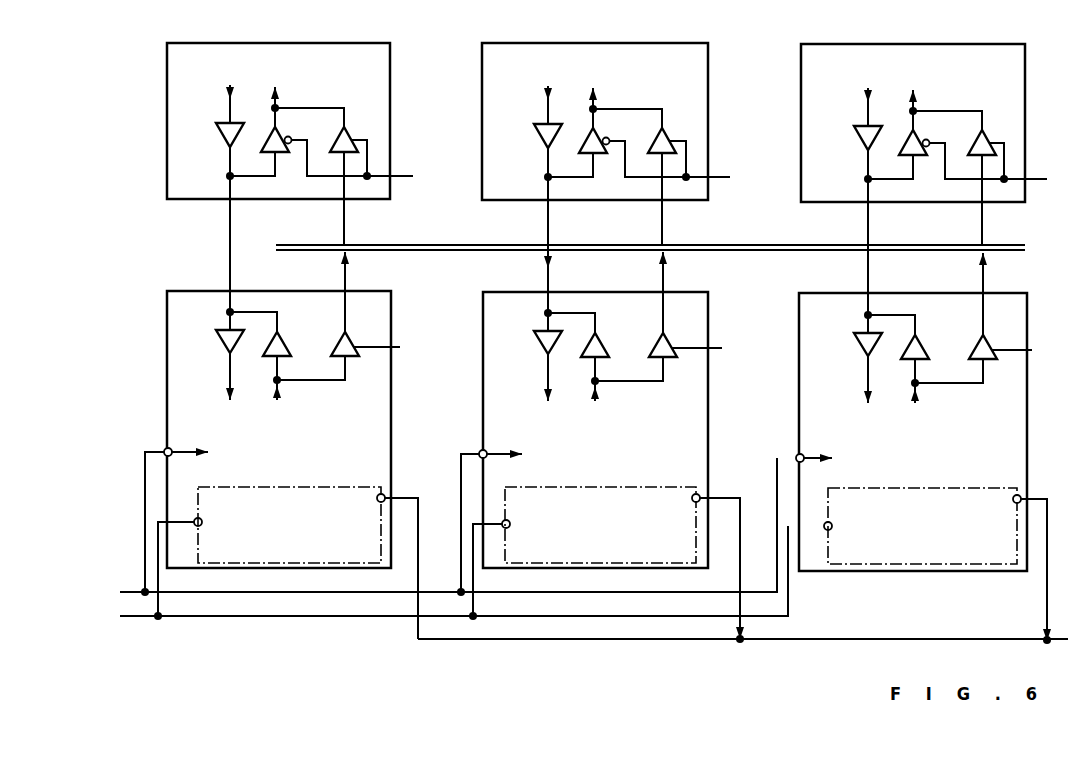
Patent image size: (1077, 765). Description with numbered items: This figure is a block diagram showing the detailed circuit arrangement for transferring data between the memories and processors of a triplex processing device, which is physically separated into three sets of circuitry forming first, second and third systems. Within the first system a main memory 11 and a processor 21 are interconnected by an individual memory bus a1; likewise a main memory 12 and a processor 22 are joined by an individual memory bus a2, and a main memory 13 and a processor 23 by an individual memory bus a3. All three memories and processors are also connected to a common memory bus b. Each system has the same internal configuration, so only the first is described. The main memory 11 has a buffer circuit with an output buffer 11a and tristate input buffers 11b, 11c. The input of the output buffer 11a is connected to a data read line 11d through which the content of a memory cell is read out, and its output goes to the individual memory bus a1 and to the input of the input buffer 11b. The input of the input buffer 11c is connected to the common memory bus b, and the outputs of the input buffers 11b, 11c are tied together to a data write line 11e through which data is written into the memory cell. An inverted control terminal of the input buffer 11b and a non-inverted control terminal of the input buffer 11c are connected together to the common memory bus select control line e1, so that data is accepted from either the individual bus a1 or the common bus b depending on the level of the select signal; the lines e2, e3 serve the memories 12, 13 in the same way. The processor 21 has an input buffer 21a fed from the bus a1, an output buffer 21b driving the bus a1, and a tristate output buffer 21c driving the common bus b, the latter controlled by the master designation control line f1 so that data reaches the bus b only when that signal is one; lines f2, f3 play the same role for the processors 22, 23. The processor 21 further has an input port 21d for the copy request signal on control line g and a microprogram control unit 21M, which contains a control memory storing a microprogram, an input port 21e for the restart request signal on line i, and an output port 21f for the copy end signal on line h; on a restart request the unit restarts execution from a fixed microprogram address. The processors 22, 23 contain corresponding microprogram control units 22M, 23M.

The main memory 11 is at (390, 60).
The main memory 12 is at (618, 143).
The main memory 13 is at (935, 144).
The output buffer 11a is at (225, 131).
The tristate input buffer 11b is at (281, 133).
The tristate input buffer 11c is at (348, 127).
The data read line 11d is at (228, 97).
The data write line 11e is at (279, 96).
The processor 21 is at (393, 302).
The processor 22 is at (618, 445).
The processor 23 is at (936, 447).
The input buffer 21a is at (224, 345).
The output buffer 21b is at (286, 341).
The tristate output buffer 21c is at (347, 332).
The input port 21d is at (170, 448).
The input port 21e is at (197, 518).
The output port 21f is at (384, 495).
The microprogram control unit 21M is at (320, 487).
The microprogram control unit 22M is at (600, 504).
The microprogram control unit 23M is at (922, 505).
The individual memory bus a1 is at (232, 222).
The individual memory bus a2 is at (566, 239).
The individual memory bus a3 is at (887, 241).
The common memory bus b is at (1010, 245).
The common memory bus select control line e1 is at (398, 178).
The common memory bus select control line e2 is at (718, 179).
The common memory bus select control line e3 is at (1035, 185).
The master designation control line f1 is at (385, 350).
The master designation control line f2 is at (706, 348).
The master designation control line f3 is at (1020, 350).
The copy request control line g is at (442, 528).
The restart request control line i is at (447, 575).
The copy end control line h is at (747, 643).